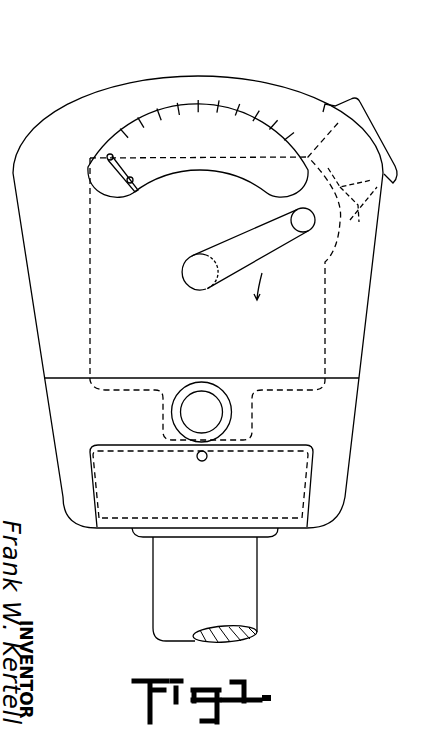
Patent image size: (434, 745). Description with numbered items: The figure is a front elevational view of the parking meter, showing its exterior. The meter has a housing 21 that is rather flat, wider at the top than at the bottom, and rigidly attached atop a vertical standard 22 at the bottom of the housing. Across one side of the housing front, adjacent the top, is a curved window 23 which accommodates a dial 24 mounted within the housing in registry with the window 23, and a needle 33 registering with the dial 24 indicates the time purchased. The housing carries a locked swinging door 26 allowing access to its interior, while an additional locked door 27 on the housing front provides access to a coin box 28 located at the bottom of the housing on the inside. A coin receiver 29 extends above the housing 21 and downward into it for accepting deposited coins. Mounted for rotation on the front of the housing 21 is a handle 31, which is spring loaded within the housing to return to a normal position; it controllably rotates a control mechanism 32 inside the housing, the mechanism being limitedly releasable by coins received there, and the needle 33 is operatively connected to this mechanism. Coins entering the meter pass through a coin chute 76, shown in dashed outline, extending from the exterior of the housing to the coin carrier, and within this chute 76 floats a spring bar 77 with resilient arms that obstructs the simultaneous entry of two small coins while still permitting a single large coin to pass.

The housing 21 is at (367, 287).
The vertical standard 22 is at (250, 603).
The window 23 is at (106, 197).
The dial 24 is at (264, 131).
The swinging door 26 is at (358, 359).
The locked door 27 is at (284, 500).
The coin box 28 is at (117, 514).
The coin receiver 29 is at (366, 129).
The handle 31 is at (270, 250).
The control mechanism 32 is at (352, 294).
The needle 33 is at (138, 192).
The coin chute 76 is at (358, 215).
The spring bar 77 is at (350, 174).